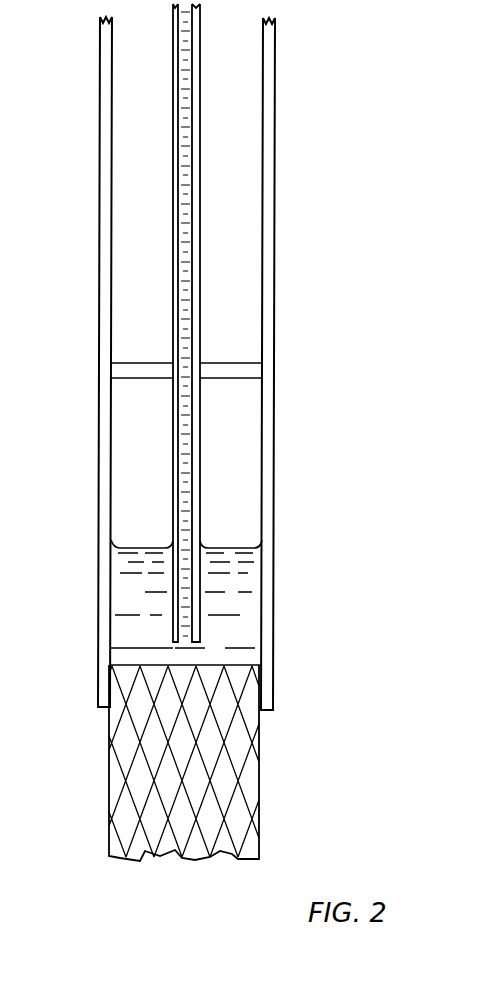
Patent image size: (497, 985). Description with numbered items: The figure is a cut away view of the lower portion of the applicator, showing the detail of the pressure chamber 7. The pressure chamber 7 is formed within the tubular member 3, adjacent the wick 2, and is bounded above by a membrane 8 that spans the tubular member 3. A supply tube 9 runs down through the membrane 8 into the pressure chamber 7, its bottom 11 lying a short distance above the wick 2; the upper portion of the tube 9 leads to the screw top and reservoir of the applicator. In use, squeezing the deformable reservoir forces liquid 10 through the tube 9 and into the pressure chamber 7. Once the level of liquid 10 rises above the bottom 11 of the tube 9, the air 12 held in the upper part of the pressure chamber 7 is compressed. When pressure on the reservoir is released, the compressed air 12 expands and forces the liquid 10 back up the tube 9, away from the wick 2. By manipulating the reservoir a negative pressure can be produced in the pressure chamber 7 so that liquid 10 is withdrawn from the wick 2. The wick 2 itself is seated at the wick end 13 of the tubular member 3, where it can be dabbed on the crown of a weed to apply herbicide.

The wick 2 is at (260, 812).
The tubular member 3 is at (277, 266).
The pressure chamber 7 is at (232, 497).
The membrane 8 is at (245, 373).
The supply tube 9 is at (172, 233).
The liquid 10 is at (125, 583).
The bottom of tube 11 is at (111, 648).
The air 12 is at (125, 445).
The wick end 13 is at (278, 688).